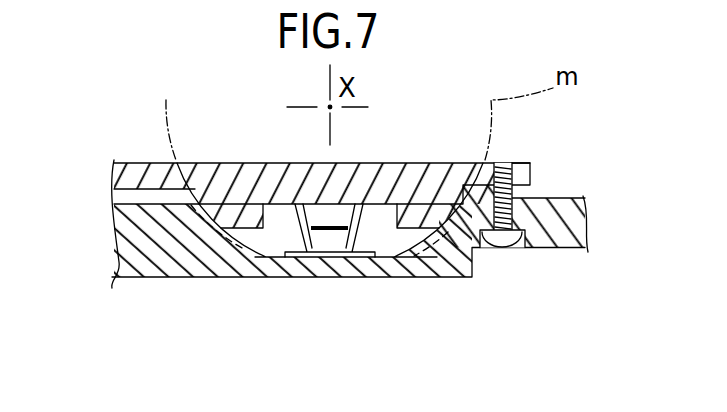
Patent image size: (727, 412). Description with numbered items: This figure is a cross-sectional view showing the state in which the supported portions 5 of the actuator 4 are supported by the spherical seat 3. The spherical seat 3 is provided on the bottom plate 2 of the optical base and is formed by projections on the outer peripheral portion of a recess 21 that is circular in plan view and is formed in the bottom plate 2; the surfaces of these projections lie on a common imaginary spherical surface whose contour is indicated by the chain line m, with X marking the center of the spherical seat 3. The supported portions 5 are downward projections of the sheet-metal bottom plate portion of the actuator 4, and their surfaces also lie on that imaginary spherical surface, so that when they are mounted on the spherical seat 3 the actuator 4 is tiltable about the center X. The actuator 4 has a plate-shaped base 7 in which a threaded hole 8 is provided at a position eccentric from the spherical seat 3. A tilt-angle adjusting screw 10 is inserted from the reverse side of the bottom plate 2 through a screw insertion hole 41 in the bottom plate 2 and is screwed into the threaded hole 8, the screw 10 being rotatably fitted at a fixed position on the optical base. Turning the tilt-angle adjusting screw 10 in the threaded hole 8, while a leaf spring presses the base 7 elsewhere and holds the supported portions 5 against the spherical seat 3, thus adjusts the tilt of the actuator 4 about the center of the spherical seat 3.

The bottom plate 2 is at (158, 280).
The spherical seat 3 is at (207, 163).
The actuator 4 is at (133, 162).
The supported portions 5 is at (221, 279).
The base 7 is at (535, 167).
The threaded hole 8 is at (503, 163).
The tilt-angle adjusting screw 10 is at (513, 249).
The recess 21 is at (280, 163).
The screw insertion hole 41 is at (507, 250).